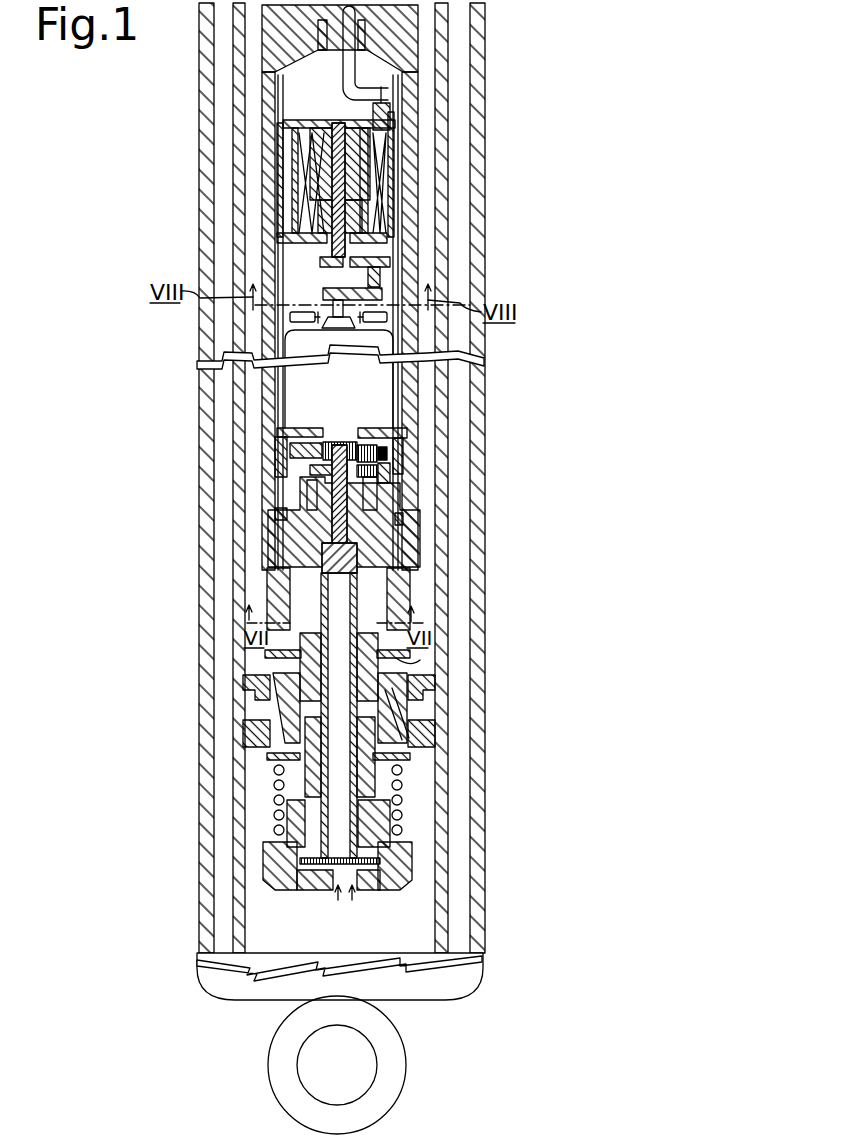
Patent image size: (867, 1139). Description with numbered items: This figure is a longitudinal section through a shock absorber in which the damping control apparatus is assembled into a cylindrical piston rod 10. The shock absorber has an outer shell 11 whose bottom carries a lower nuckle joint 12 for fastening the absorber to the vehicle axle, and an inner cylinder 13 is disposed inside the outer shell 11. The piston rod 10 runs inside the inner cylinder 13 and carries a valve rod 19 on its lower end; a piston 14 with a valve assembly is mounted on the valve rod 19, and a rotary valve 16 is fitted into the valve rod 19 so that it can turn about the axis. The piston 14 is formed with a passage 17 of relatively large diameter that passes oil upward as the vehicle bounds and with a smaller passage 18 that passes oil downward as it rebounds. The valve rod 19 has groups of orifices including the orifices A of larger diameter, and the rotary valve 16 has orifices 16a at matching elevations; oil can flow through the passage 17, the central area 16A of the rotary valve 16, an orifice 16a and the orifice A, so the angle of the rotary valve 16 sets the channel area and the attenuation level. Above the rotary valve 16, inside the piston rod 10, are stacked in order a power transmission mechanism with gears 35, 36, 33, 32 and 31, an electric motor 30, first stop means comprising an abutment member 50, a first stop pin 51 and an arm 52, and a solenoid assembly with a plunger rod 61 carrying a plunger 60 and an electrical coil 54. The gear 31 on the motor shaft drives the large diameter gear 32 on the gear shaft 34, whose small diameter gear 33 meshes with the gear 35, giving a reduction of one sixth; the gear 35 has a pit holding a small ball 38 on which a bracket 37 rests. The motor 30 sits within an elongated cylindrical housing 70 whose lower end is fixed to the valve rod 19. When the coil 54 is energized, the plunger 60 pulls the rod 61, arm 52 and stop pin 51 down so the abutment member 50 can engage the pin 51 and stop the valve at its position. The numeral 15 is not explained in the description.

The piston rod 10 is at (412, 390).
The outer shell 11 is at (486, 456).
The lower nuckle joint 12 is at (383, 1027).
The inner cylinder 13 is at (237, 573).
The piston 14 is at (267, 742).
The piston body 15 is at (437, 537).
The rotary valve 16 is at (425, 705).
The central area of rotary valve 16A is at (425, 660).
The orifices of rotary valve 16a is at (300, 647).
The passage of relatively large diameter 17 is at (412, 724).
The passage of relatively small diameter 18 is at (277, 703).
The valve rod 19 is at (287, 542).
The electric motor 30 is at (292, 383).
The gear 31 is at (302, 392).
The large diameter gear 32 is at (427, 407).
The small diameter gear 33 is at (395, 468).
The gear shaft 34 is at (420, 490).
The gear 35 is at (443, 513).
The power transmission mechanism element 36 is at (277, 507).
The bracket 37 is at (277, 440).
The small ball 38 is at (277, 462).
The abutment member 50 is at (388, 318).
The first stop pin 51 is at (385, 294).
The arm 52 is at (392, 280).
The electrical coil 54 is at (277, 180).
The plunger 60 is at (283, 210).
The plunger rod 61 is at (300, 247).
The elongated cylindrical housing 70 is at (400, 213).
The orifices of larger diameter A is at (300, 592).